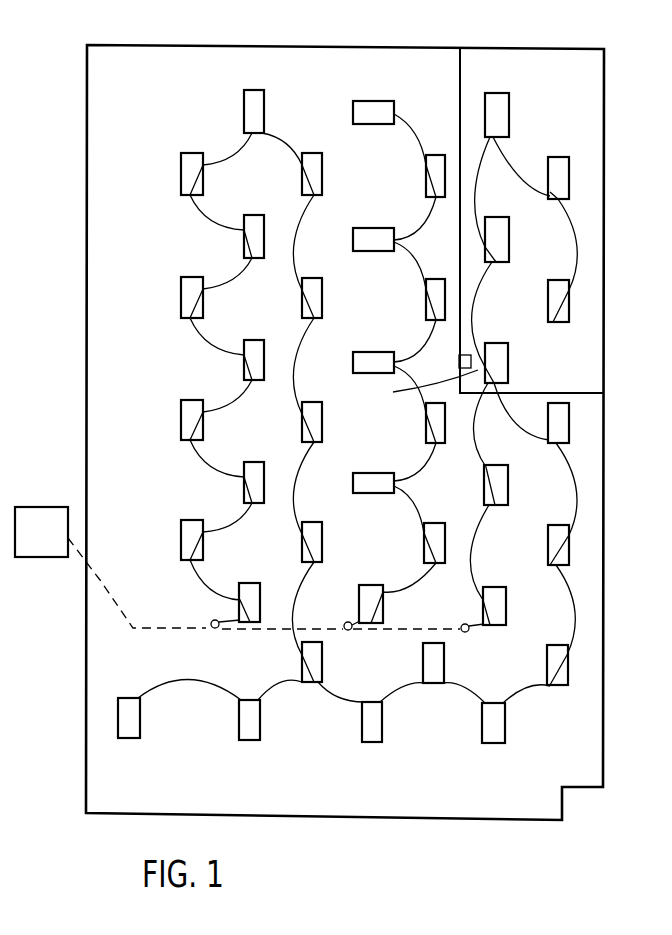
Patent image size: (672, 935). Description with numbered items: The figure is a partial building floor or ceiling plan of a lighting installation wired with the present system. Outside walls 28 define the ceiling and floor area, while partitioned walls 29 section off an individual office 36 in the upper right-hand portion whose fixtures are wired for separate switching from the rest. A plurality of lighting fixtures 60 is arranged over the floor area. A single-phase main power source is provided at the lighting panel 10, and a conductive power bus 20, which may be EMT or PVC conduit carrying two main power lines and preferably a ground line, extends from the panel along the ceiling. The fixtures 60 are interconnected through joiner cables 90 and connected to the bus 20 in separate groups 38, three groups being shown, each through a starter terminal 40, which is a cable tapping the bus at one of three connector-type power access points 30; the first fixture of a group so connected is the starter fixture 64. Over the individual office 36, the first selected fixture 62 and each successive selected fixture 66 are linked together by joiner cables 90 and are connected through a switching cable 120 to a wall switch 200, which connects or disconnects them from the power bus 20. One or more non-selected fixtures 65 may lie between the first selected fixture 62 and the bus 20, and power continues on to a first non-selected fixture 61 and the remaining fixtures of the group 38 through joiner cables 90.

The lighting panel 10 is at (48, 492).
The power bus 20 is at (100, 580).
The outside walls 28 is at (175, 45).
The partitioned walls 29 is at (460, 66).
The power access points 30 is at (205, 621).
The individual office 36 is at (543, 67).
The fixture groups 38 is at (312, 153).
The starter terminal 40 is at (218, 620).
The lighting fixtures 60 is at (186, 282).
The first non-selected fixture 61 is at (563, 420).
The first selected fixture 62 is at (498, 366).
The starter fixture 64 is at (265, 562).
The non-selected fixtures 65 is at (496, 487).
The successive selected fixture 66 is at (498, 246).
The joiner cables 90 is at (184, 681).
The switching cable 120 is at (418, 387).
The switch 200 is at (459, 363).